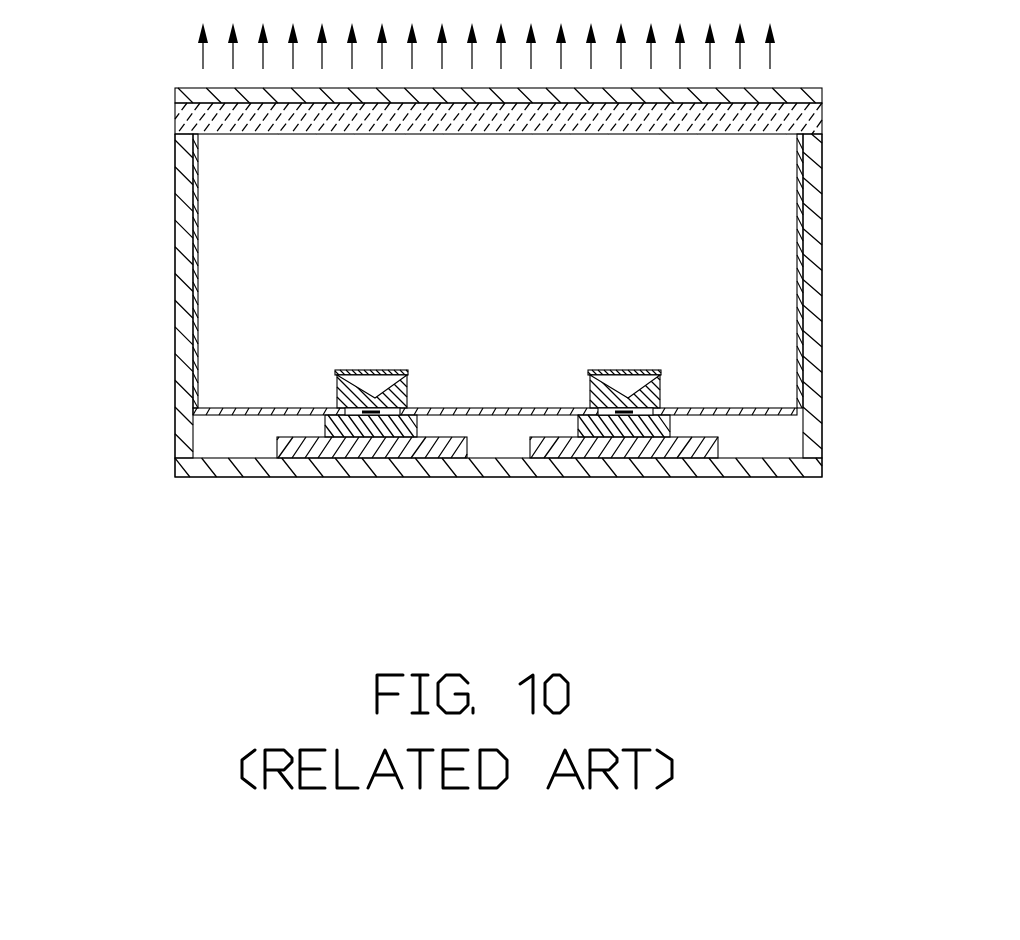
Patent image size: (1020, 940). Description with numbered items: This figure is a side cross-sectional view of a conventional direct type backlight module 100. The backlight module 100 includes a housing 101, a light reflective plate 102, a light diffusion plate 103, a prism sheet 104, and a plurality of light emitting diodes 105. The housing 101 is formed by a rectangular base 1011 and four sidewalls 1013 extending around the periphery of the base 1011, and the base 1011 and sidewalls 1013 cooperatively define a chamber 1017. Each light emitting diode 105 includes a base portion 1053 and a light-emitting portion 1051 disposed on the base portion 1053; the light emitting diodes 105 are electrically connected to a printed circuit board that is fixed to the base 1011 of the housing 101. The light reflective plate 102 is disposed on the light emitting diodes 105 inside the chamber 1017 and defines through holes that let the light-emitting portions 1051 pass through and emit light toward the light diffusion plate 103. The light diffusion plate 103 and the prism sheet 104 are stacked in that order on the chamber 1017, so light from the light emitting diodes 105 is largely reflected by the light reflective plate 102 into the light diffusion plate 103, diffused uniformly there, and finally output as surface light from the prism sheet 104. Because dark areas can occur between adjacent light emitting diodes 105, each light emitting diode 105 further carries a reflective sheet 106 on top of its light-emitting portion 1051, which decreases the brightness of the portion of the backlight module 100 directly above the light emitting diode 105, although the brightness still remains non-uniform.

The backlight module 100 is at (145, 48).
The housing 101 is at (83, 337).
The base 1011 is at (224, 468).
The sidewalls 1013 is at (186, 350).
The chamber 1017 is at (783, 190).
The light reflective plate 102 is at (724, 410).
The light diffusion plate 103 is at (816, 116).
The prism sheet 104 is at (790, 93).
The light emitting diode 105 is at (393, 555).
The light-emitting portion 1051 is at (340, 398).
The base portion 1053 is at (358, 418).
The reflective sheet 106 is at (358, 370).